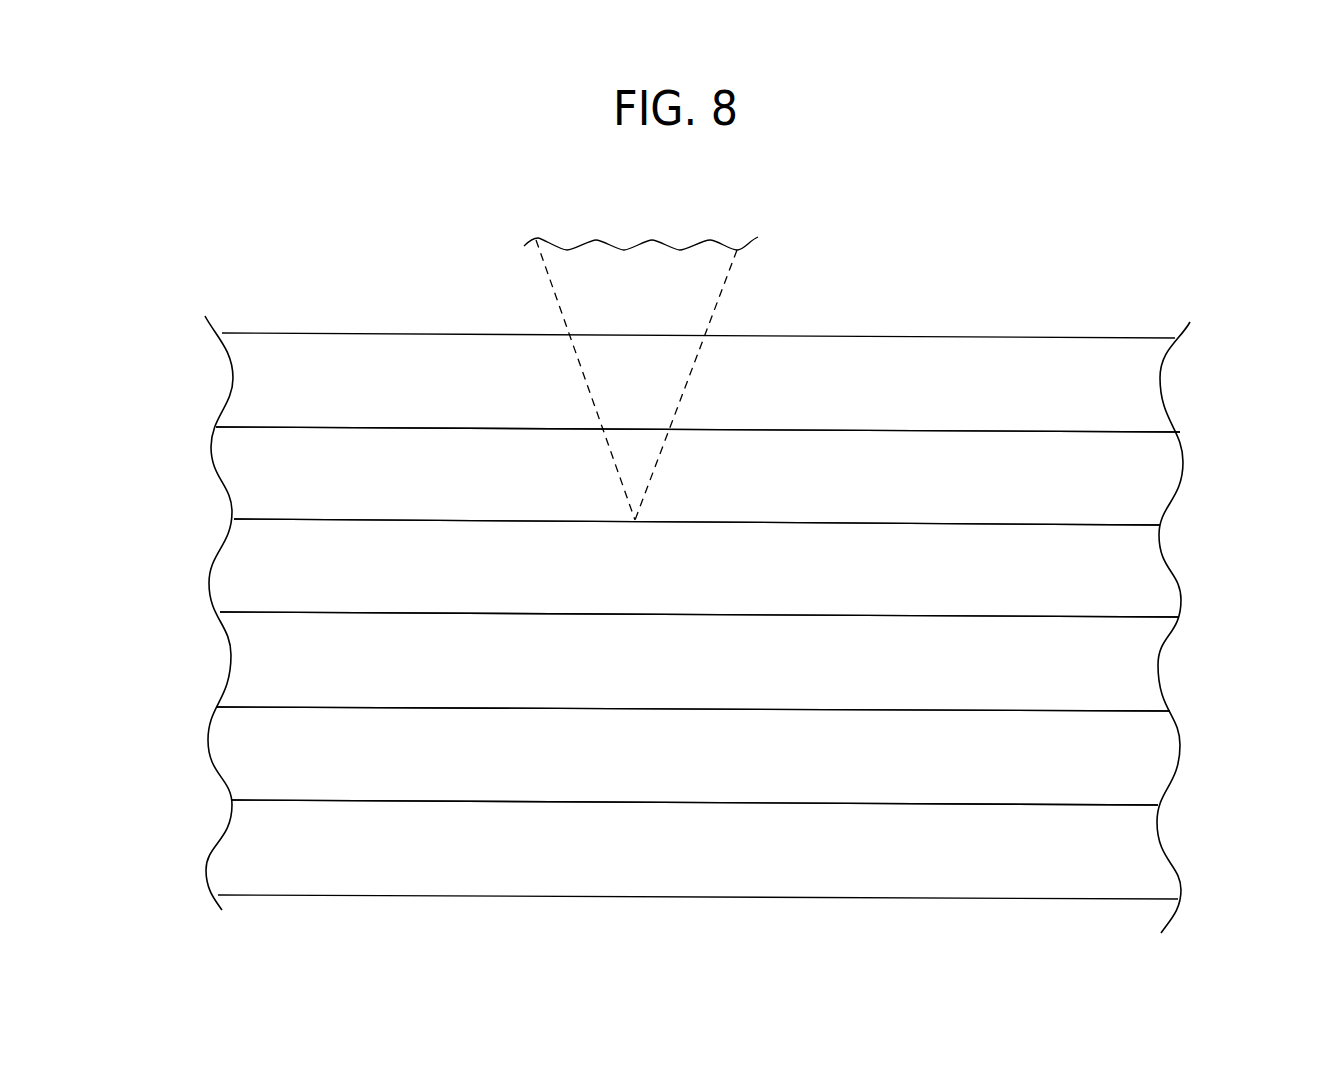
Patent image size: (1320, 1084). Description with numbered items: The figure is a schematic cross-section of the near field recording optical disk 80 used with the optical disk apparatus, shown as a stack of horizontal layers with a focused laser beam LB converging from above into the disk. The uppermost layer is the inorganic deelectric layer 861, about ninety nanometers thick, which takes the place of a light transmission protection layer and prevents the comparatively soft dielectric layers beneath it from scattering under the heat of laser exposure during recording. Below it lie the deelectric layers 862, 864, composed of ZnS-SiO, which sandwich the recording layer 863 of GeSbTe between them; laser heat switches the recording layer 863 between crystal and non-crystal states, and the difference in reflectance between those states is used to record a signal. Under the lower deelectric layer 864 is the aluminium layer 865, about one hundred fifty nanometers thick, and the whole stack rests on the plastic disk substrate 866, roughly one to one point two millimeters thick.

The optical disk 80 is at (743, 578).
The laser beam LB is at (710, 287).
The inorganic deelectric layer 861 is at (1157, 400).
The deelectric layer 862 is at (1157, 477).
The recording layer 863 is at (1157, 570).
The deelectric layer 864 is at (1157, 665).
The aluminium layer 865 is at (1157, 758).
The disk substrate 866 is at (1157, 853).